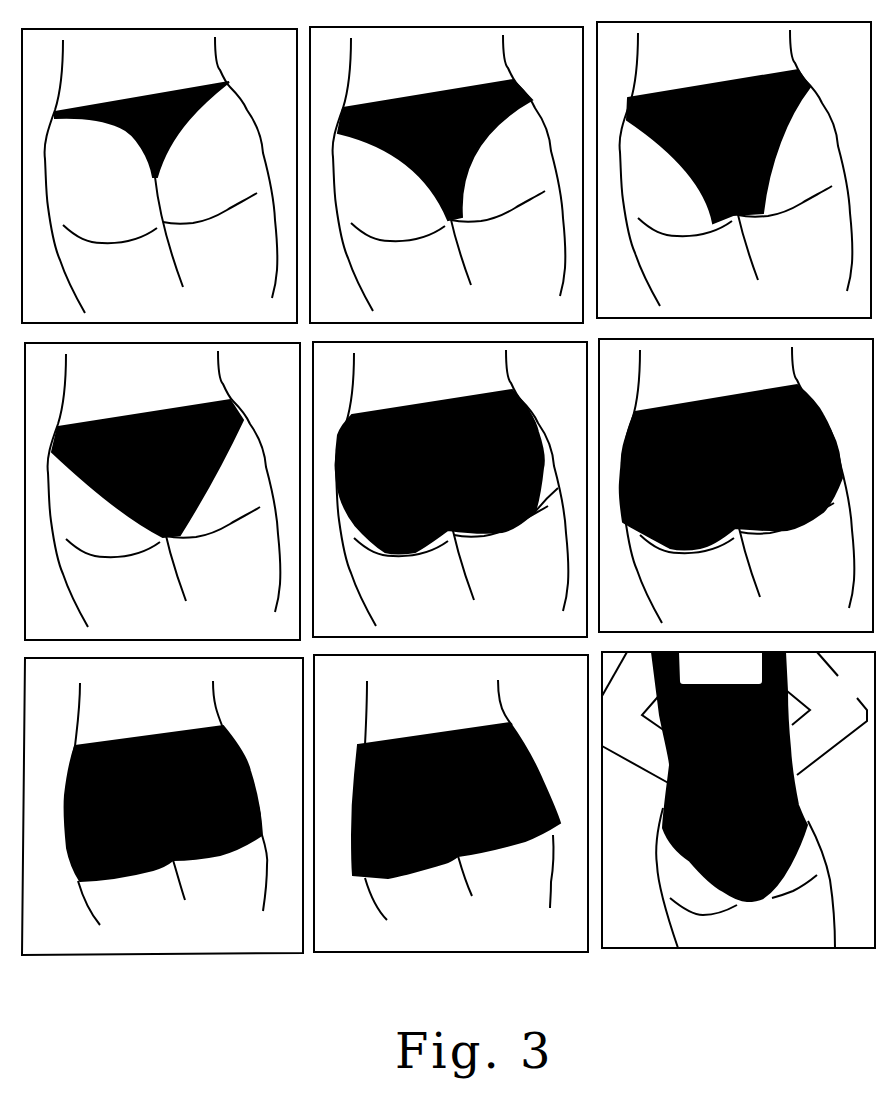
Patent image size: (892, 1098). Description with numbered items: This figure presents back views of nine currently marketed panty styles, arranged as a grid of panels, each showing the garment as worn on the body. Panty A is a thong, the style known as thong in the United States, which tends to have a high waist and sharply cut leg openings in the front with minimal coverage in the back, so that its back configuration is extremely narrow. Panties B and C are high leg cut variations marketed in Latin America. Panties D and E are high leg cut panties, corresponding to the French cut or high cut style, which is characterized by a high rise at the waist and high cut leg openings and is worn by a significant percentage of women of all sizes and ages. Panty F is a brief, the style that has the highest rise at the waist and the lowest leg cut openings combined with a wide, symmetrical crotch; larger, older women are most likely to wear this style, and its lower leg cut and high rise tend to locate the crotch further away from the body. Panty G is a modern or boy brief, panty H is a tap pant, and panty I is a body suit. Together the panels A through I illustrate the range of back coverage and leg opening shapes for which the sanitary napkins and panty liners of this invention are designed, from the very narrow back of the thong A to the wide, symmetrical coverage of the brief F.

The thong panty A is at (159, 176).
The high leg cut panty B is at (446, 175).
The high leg cut panty C is at (734, 170).
The high leg cut panty D is at (162, 491).
The high leg cut panty E is at (450, 489).
The brief F is at (736, 485).
The modern or boy brief G is at (162, 806).
The tap pant H is at (451, 803).
The body suit I is at (738, 800).